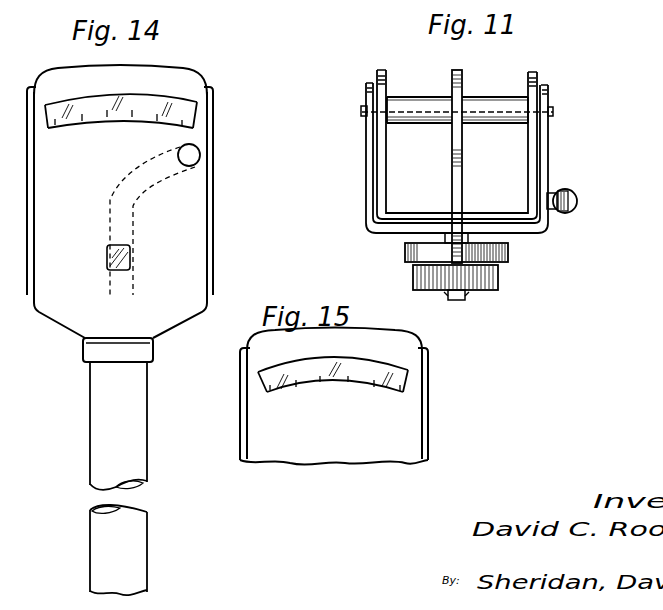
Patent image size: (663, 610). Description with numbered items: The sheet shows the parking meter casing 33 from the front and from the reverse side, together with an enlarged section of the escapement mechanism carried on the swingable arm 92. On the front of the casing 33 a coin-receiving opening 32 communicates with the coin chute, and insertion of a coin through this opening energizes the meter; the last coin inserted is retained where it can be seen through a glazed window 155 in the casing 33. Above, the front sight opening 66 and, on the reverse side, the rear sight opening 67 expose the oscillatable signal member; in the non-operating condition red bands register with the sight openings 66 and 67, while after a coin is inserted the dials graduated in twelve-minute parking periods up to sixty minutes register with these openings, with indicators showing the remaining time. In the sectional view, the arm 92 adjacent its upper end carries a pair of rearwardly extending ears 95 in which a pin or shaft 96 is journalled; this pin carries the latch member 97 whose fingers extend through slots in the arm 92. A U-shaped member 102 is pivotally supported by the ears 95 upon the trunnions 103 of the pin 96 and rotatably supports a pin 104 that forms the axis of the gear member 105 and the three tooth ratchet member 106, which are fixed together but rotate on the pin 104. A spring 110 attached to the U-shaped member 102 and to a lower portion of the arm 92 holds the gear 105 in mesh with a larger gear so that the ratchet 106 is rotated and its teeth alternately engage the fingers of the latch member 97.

In FIG. 14, the casing 33 is at (200, 238).
In FIG. 14, the front sight opening 66 is at (196, 118).
In FIG. 14, the coin-receiving opening 32 is at (200, 157).
In FIG. 14, the glazed window 155 is at (131, 262).
In FIG. 11, the U-shaped member 102 is at (548, 163).
In FIG. 11, the ears 95 is at (383, 166).
In FIG. 11, the pin or shaft 96 is at (488, 102).
In FIG. 11, the trunnions 103 is at (361, 111).
In FIG. 11, the latch member 97 is at (462, 82).
In FIG. 11, the swingable arm 92 is at (481, 218).
In FIG. 11, the spring 110 is at (585, 200).
In FIG. 11, the three tooth ratchet member 106 is at (510, 259).
In FIG. 11, the gear member 105 is at (498, 288).
In FIG. 11, the pin 104 is at (462, 304).
In FIG. 15, the rear sight opening 67 is at (410, 390).